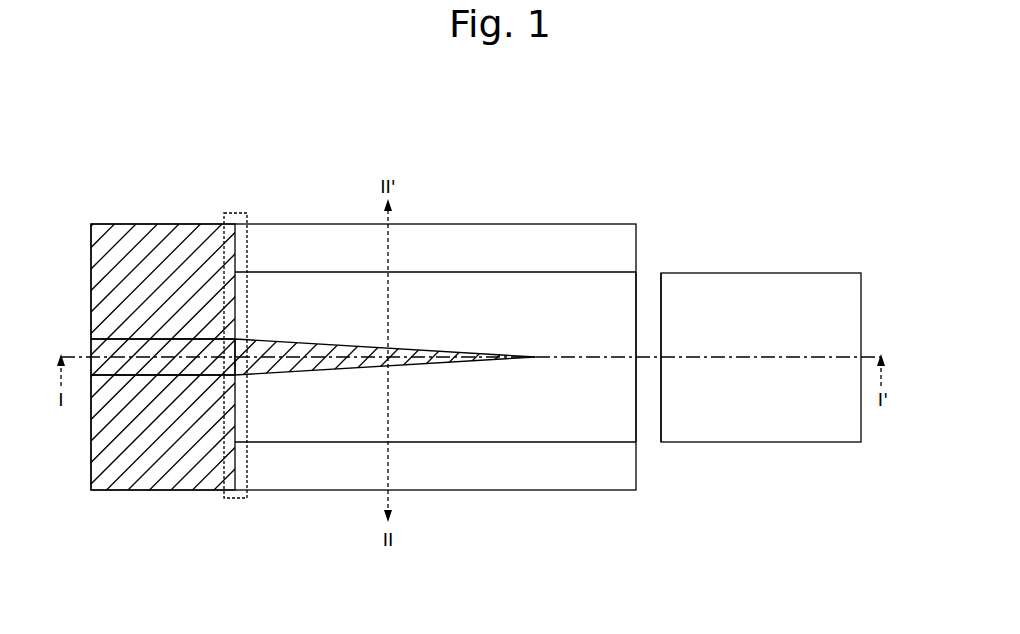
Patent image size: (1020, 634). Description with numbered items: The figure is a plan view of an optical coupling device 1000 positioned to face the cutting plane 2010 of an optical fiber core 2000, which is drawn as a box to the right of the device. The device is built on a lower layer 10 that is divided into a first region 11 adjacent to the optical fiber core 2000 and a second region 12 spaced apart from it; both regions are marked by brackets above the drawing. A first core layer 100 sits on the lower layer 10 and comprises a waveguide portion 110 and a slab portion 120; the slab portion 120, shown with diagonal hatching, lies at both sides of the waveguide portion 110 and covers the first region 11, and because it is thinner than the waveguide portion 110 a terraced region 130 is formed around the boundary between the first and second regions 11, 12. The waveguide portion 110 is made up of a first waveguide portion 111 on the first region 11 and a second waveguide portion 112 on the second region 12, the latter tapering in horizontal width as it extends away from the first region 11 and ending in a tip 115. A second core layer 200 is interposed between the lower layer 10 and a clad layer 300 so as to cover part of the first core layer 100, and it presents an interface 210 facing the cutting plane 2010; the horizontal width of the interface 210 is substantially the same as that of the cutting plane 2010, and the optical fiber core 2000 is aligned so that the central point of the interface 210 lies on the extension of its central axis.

The lower layer 10 is at (532, 224).
The first region 11 is at (235, 157).
The second region 12 is at (636, 157).
The first core layer 100 is at (119, 589).
The waveguide portion 110 is at (176, 546).
The first waveguide portion 111 is at (188, 378).
The second waveguide portion 112 is at (287, 380).
The tip 115 is at (546, 350).
The slab portion 120 is at (135, 478).
The terraced region 130 is at (235, 213).
The second core layer 200 is at (561, 430).
The interface 210 is at (637, 293).
The clad layer 300 is at (466, 478).
The optical coupling device 1000 is at (636, 107).
The optical fiber core 2000 is at (767, 273).
The cutting plane 2010 is at (661, 430).